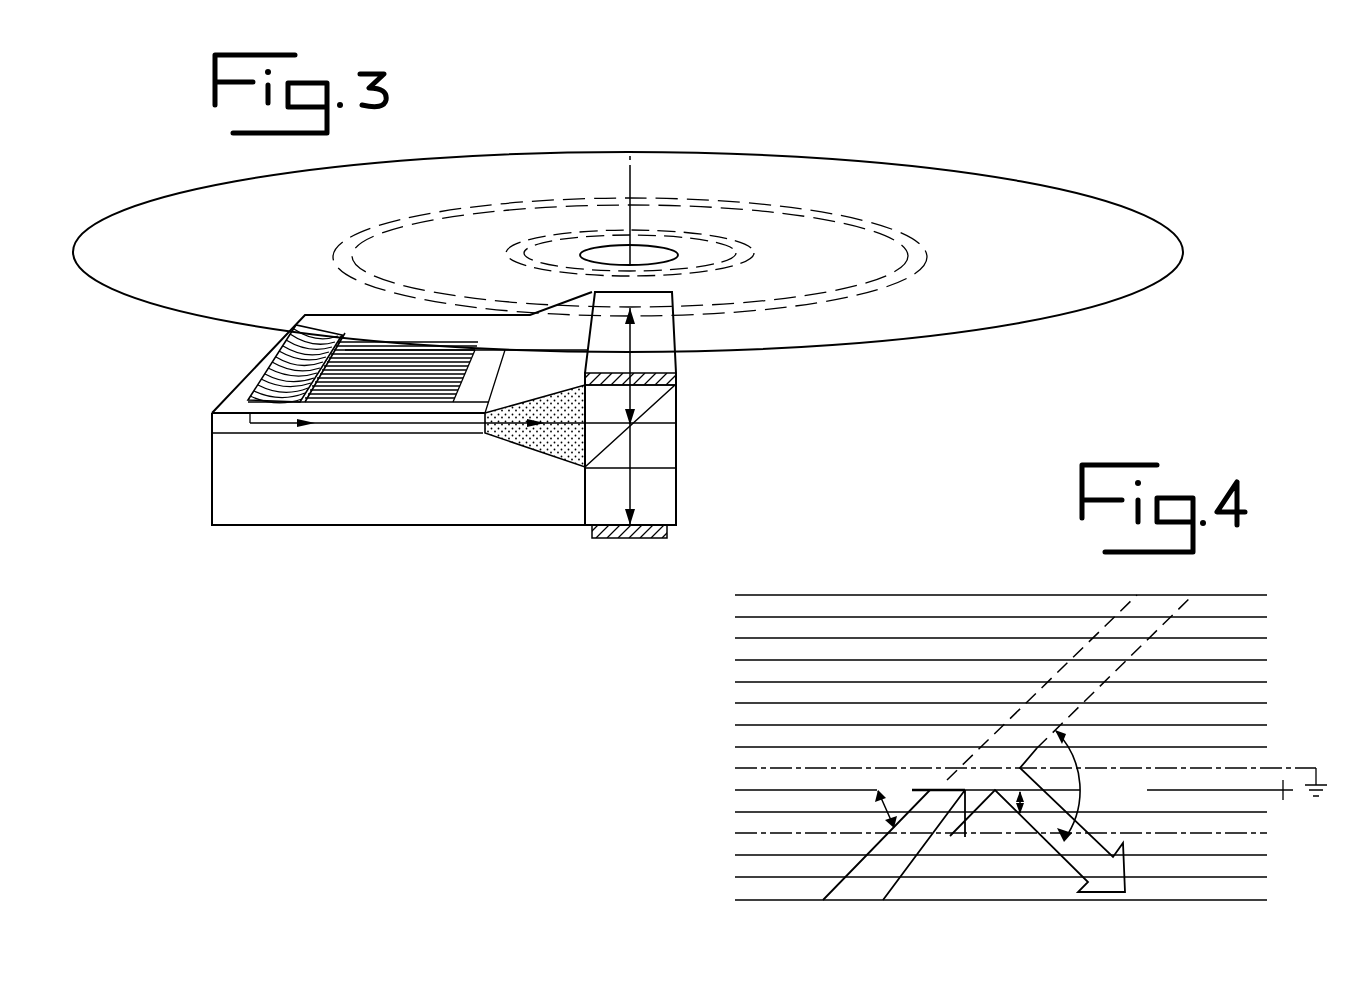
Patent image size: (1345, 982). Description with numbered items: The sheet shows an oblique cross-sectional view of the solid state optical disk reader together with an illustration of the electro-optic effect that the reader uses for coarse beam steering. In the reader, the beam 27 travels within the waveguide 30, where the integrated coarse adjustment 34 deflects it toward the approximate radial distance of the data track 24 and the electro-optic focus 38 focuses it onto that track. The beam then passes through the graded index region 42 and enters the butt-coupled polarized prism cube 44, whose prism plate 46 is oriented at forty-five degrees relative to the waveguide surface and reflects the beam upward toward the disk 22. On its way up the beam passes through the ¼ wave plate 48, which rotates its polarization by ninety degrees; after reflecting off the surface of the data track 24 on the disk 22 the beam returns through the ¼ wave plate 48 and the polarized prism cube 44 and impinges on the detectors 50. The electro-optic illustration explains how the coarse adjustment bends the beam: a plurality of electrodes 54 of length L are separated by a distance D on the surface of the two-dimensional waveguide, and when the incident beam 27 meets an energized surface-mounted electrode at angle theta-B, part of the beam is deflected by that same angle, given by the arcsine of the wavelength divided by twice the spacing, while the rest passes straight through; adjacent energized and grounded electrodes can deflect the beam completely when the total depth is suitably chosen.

In FIG. 3, the disk 22 is at (1047, 207).
In FIG. 3, the data track 24 is at (817, 305).
In FIG. 4, the beam 27 is at (896, 887).
In FIG. 3, the waveguide 30 is at (420, 431).
In FIG. 3, the integrated coarse adjustment 34 is at (272, 352).
In FIG. 3, the electro-optic focus 38 is at (462, 370).
In FIG. 3, the graded index region 42 is at (545, 455).
In FIG. 3, the polarized prism cube 44 is at (667, 453).
In FIG. 3, the prism plate 46 is at (649, 416).
In FIG. 3, the ¼ wave plate 48 is at (676, 380).
In FIG. 3, the detectors 50 is at (660, 528).
In FIG. 4, the electrodes 54 is at (1257, 792).